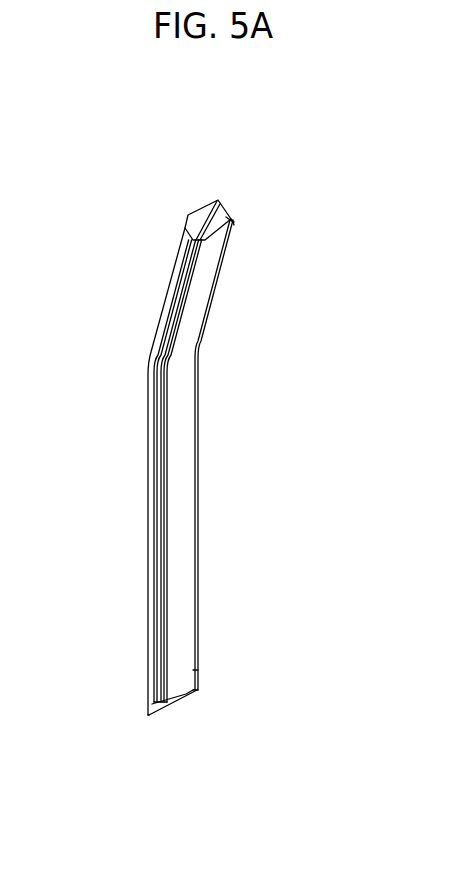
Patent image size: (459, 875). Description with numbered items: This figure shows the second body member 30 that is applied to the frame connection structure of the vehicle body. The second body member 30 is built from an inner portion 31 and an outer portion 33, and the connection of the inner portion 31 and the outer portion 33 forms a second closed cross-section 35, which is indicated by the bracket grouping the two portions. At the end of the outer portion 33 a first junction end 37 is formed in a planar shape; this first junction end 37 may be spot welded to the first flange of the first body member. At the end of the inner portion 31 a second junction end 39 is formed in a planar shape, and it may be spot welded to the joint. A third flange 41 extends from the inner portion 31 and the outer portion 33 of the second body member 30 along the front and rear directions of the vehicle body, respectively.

The second body member 30 is at (67, 112).
The inner portion 31 is at (180, 397).
The outer portion 33 is at (155, 343).
The second closed cross-section 35 is at (98, 337).
The first junction end 37 is at (198, 204).
The second junction end 39 is at (233, 237).
The third flange 41 is at (161, 536).